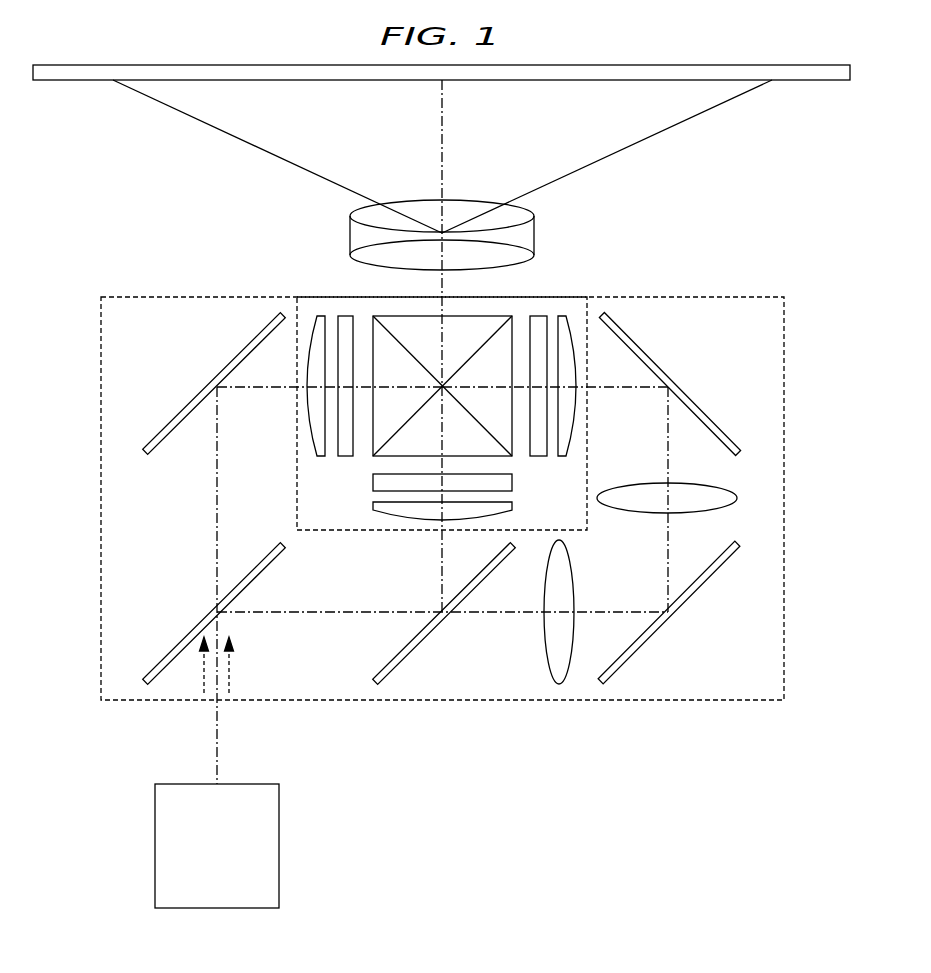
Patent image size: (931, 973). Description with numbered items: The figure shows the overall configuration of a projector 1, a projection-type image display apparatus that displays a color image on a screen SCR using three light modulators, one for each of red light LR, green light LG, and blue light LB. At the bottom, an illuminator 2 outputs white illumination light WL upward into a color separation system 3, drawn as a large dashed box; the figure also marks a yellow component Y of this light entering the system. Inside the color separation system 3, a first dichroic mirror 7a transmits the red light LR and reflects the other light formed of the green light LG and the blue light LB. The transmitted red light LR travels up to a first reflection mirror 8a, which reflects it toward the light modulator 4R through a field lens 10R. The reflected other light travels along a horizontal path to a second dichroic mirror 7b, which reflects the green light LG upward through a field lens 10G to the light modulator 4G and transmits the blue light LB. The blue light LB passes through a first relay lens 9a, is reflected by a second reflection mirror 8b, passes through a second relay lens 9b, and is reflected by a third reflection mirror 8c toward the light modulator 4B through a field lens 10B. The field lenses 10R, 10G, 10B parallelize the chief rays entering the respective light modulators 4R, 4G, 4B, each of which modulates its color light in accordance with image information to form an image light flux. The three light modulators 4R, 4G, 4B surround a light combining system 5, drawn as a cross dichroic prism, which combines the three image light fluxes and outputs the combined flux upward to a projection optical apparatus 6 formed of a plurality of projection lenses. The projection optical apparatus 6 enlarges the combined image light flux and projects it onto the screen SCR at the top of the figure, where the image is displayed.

The projector 1 is at (797, 266).
The illuminator 2 is at (280, 878).
The color separation system 3 is at (101, 452).
The light modulator 4R is at (345, 315).
The light modulator 4G is at (380, 483).
The light modulator 4B is at (539, 315).
The light combining system 5 is at (463, 325).
The projection optical apparatus 6 is at (425, 212).
The first dichroic mirror 7a is at (178, 645).
The second dichroic mirror 7b is at (418, 647).
The first reflection mirror 8a is at (190, 400).
The second reflection mirror 8b is at (695, 598).
The third reflection mirror 8c is at (700, 400).
The first relay lens 9a is at (544, 632).
The second relay lens 9b is at (726, 489).
The field lens 10R is at (318, 316).
The field lens 10G is at (375, 508).
The field lens 10B is at (575, 316).
The screen SCR is at (818, 81).
The red light LR is at (217, 520).
The green light LG is at (442, 567).
The blue light LB is at (668, 558).
The yellow light Y is at (204, 692).
The illumination light WL is at (355, 705).